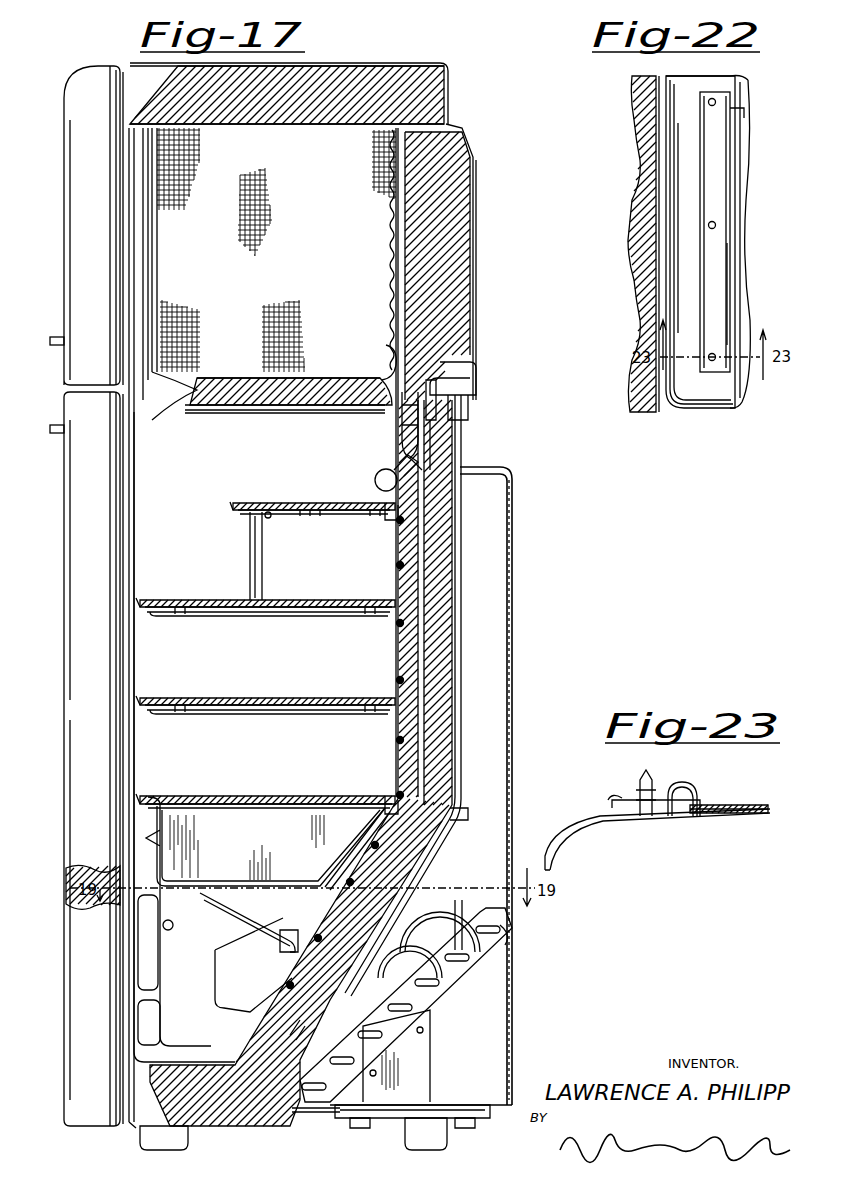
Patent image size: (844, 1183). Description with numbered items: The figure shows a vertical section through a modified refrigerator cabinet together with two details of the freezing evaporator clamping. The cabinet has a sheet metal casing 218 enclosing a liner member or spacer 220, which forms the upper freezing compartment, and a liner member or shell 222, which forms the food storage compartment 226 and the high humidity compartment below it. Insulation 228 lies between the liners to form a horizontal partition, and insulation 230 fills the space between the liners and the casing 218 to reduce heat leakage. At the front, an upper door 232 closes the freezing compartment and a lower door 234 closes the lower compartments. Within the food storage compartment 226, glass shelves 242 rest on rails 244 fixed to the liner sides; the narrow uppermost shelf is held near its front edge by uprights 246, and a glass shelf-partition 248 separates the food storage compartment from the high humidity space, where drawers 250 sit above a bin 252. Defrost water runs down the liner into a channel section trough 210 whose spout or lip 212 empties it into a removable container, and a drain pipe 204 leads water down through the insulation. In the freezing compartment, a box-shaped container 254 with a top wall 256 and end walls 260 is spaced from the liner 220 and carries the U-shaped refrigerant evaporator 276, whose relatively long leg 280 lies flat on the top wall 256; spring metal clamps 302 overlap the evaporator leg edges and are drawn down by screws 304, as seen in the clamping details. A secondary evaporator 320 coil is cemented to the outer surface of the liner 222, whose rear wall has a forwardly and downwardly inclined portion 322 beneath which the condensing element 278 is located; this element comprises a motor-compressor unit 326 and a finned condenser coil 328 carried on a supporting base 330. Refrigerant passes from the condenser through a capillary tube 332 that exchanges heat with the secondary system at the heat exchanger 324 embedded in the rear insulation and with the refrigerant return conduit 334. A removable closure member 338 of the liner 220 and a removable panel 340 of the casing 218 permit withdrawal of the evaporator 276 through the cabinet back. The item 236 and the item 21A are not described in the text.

In FIG. 17, the sheet metal casing 218 is at (330, 68).
In FIG. 17, the liner member or spacer 220 is at (160, 218).
In FIG. 17, the liner member or shell 222 is at (306, 410).
In FIG. 17, the food storage compartment 226 is at (145, 520).
In FIG. 17, the insulation 228 is at (236, 402).
In FIG. 17, the insulation 230 is at (435, 92).
In FIG. 22, the insulation 230 is at (645, 236).
In FIG. 17, the upper door 232 is at (66, 165).
In FIG. 17, the lower door 234 is at (85, 768).
In FIG. 17, the evaporator outlet 236 is at (386, 357).
In FIG. 17, the drain pipe 204 is at (400, 418).
In FIG. 17, the shelves 242 is at (336, 504).
In FIG. 17, the rails 244 is at (325, 513).
In FIG. 17, the uprights 246 is at (262, 550).
In FIG. 17, the shelf-partition 248 is at (334, 797).
In FIG. 17, the drawers 250 is at (232, 797).
In FIG. 17, the bin 252 is at (165, 1025).
In FIG. 22, the storage compartment forming container 254 is at (705, 392).
In FIG. 23, the storage compartment forming container 254 is at (617, 858).
In FIG. 22, the top wall 256 is at (718, 84).
In FIG. 23, the top wall 256 is at (678, 818).
In FIG. 22, the end walls 260 is at (670, 170).
In FIG. 22, the refrigerant evaporator 276 is at (795, 262).
In FIG. 23, the refrigerant evaporator 276 is at (757, 815).
In FIG. 17, the refrigerant condensing element 278 is at (315, 1112).
In FIG. 22, the relatively long leg 280 is at (745, 176).
In FIG. 22, the clamps 302 is at (712, 134).
In FIG. 23, the clamps 302 is at (690, 800).
In FIG. 22, the self threading or sheet metal screws 304 is at (714, 104).
In FIG. 23, the self threading or sheet metal screws 304 is at (640, 784).
In FIG. 17, the refrigerant evaporator 320 is at (395, 748).
In FIG. 17, the forwardly and downwardly inclined portion 322 is at (360, 843).
In FIG. 17, the heat exchanger or evaporator 324 is at (428, 402).
In FIG. 17, the motor-compressor unit 326 is at (386, 986).
In FIG. 17, the finned condenser coil 328 is at (508, 946).
In FIG. 17, the supporting base 330 is at (462, 1120).
In FIG. 17, the capillary tube 332 is at (447, 380).
In FIG. 17, the refrigerant return conduit 334 is at (450, 356).
In FIG. 17, the removable rear wall or closure member 338 is at (397, 238).
In FIG. 17, the removable panel or closure member 340 is at (476, 272).
In FIG. 17, the channel section trough 210 is at (212, 893).
In FIG. 17, the spout or lip 212 is at (282, 940).
In FIG. 17, the drain panel 21A is at (240, 984).